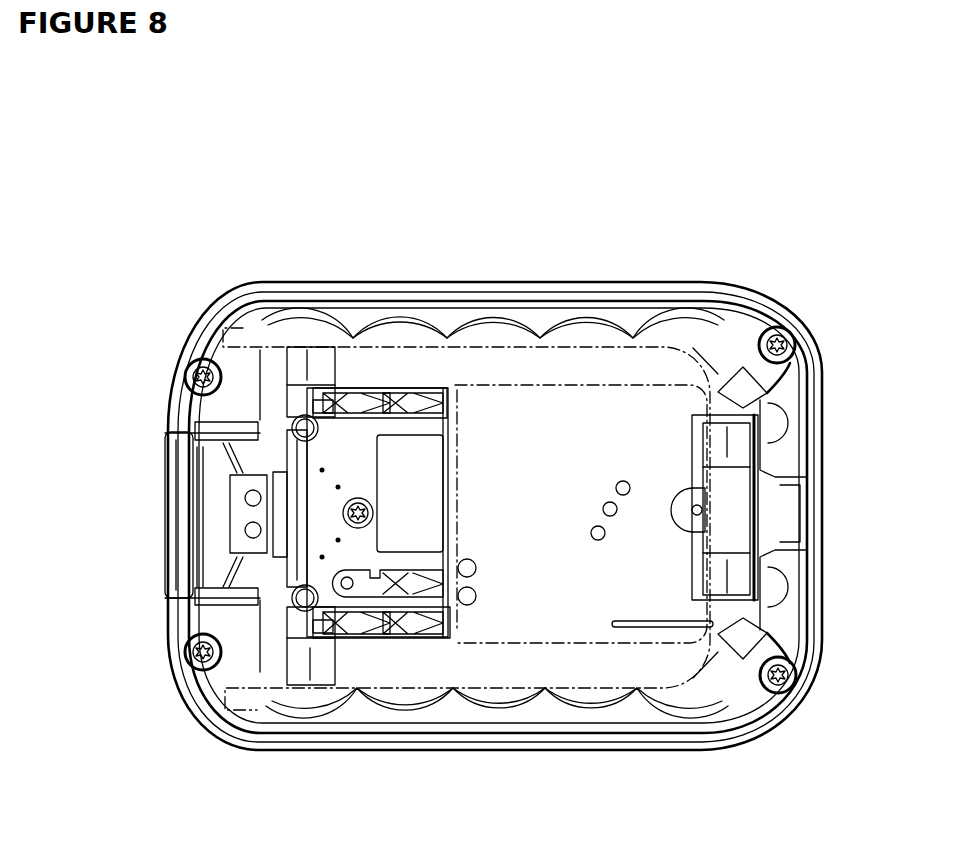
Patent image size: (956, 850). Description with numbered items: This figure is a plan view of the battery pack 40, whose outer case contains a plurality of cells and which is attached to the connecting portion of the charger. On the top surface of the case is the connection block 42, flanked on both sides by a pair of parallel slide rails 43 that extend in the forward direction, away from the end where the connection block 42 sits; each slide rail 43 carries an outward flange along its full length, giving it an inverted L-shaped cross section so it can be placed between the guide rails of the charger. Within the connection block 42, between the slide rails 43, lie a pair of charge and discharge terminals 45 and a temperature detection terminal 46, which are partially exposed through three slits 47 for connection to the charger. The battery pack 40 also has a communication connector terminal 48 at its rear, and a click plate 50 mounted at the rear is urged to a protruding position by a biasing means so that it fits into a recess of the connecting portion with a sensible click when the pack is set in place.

The battery pack 40 is at (602, 262).
The connection block 42 is at (456, 430).
The slide rails 43 is at (675, 330).
The charge and discharge terminals 45 is at (404, 390).
The temperature detection terminal 46 is at (447, 560).
The slits 47 is at (353, 395).
The communication connector terminal 48 is at (433, 490).
The click plate 50 is at (205, 510).